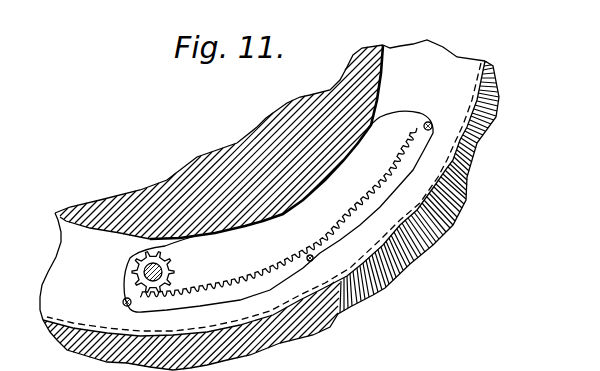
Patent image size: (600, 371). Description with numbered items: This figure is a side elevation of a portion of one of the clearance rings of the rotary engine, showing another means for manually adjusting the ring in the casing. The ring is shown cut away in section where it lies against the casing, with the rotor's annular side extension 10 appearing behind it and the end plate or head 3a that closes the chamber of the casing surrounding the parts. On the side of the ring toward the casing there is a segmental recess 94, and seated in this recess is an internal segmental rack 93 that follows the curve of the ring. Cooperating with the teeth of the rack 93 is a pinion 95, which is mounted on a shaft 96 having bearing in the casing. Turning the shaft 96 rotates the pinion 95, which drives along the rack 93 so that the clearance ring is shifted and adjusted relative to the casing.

The annular side extension 10 is at (263, 118).
The internal segmental rack 93 is at (357, 203).
The segmental recess 94 is at (224, 241).
The pinion 95 is at (172, 272).
The shaft 96 is at (130, 282).
The end plate 3a is at (380, 290).